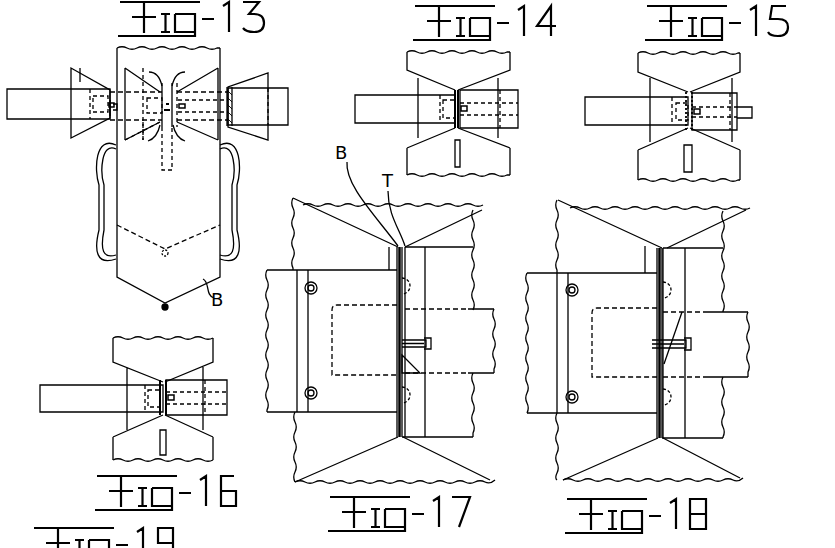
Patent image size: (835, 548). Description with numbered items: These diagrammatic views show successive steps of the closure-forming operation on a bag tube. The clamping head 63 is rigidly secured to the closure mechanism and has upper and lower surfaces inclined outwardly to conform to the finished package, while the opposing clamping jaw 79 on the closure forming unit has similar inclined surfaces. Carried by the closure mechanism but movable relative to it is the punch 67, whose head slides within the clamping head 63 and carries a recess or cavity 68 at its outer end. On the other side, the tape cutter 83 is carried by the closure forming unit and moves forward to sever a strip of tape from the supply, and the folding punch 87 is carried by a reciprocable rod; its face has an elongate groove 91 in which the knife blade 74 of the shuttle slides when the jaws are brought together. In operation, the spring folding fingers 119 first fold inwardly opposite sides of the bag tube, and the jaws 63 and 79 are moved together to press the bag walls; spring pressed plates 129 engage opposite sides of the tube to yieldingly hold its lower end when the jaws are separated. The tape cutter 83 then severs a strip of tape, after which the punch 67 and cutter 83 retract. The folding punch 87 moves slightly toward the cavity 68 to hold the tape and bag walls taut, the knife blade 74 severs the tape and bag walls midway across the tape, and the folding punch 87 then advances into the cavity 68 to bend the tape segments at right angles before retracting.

In FIG. 13, the clamping head 63 is at (80, 81).
In FIG. 13, the punch 67 is at (40, 96).
In FIG. 16, the punch 67 is at (80, 392).
In FIG. 17, the recess or cavity 68 is at (341, 308).
In FIG. 13, the knife blade 74 is at (113, 104).
In FIG. 17, the knife blade 74 is at (402, 343).
In FIG. 18, the knife blade 74 is at (663, 340).
In FIG. 13, the clamping jaw 79 is at (260, 73).
In FIG. 13, the tape cutter 83 is at (283, 97).
In FIG. 15, the tape cutter 83 is at (728, 98).
In FIG. 16, the tape cutter 83 is at (220, 387).
In FIG. 13, the folding punch 87 is at (285, 108).
In FIG. 17, the folding punch 87 is at (487, 331).
In FIG. 18, the folding punch 87 is at (745, 333).
In FIG. 18, the elongate groove 91 is at (664, 362).
In FIG. 13, the spring folding finger 119 is at (116, 142).
In FIG. 14, the spring folding finger 119 is at (458, 155).
In FIG. 13, the spring pressed plate 129 is at (222, 203).